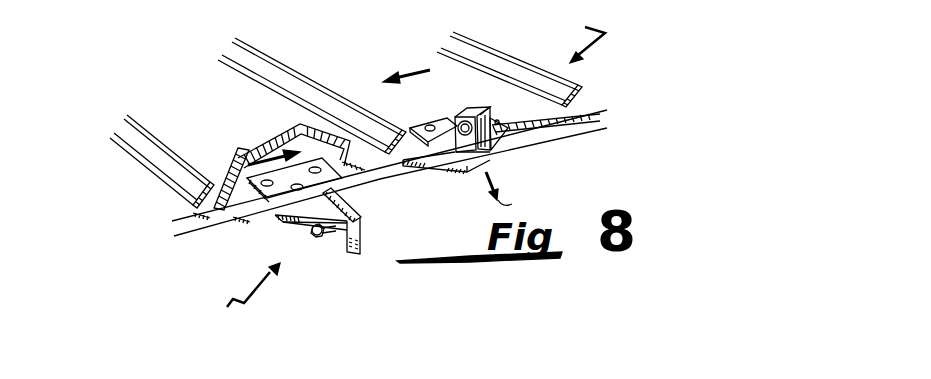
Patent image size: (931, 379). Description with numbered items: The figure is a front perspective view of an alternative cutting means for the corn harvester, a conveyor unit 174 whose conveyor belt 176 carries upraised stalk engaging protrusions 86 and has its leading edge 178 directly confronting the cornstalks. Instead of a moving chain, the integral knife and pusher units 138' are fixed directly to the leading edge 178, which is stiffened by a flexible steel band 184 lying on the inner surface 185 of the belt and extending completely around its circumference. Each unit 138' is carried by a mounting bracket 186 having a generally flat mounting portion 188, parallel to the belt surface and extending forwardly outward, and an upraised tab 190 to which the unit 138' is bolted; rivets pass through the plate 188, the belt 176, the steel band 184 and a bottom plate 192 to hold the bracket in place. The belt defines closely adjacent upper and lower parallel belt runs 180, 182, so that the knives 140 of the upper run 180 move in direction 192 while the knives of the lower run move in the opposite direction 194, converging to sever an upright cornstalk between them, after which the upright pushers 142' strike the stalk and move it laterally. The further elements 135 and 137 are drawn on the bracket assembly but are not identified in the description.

The upraised stalk engaging protrusions 86 is at (252, 50).
The conveyor belt 176 is at (350, 76).
The inner surface of the conveyor belt 185 is at (288, 143).
The opposite direction 194 is at (253, 160).
The bottom plate 192 is at (252, 180).
The flexible steel band 184 is at (244, 198).
The upper belt run 180 is at (588, 108).
The lower belt run 182 is at (578, 134).
The leading edge 178 is at (600, 113).
The mounting bracket 186 is at (413, 127).
The knives 140 is at (452, 165).
The flat mounting portion 188 is at (495, 143).
The upright pushers 142' is at (406, 183).
The gusset / bolt 137 is at (481, 98).
The upraised tab 190 is at (527, 43).
The bracket 135 is at (275, 255).
The conveyor unit 174 is at (591, 31).
The integral knife and pusher unit 138' is at (379, 255).